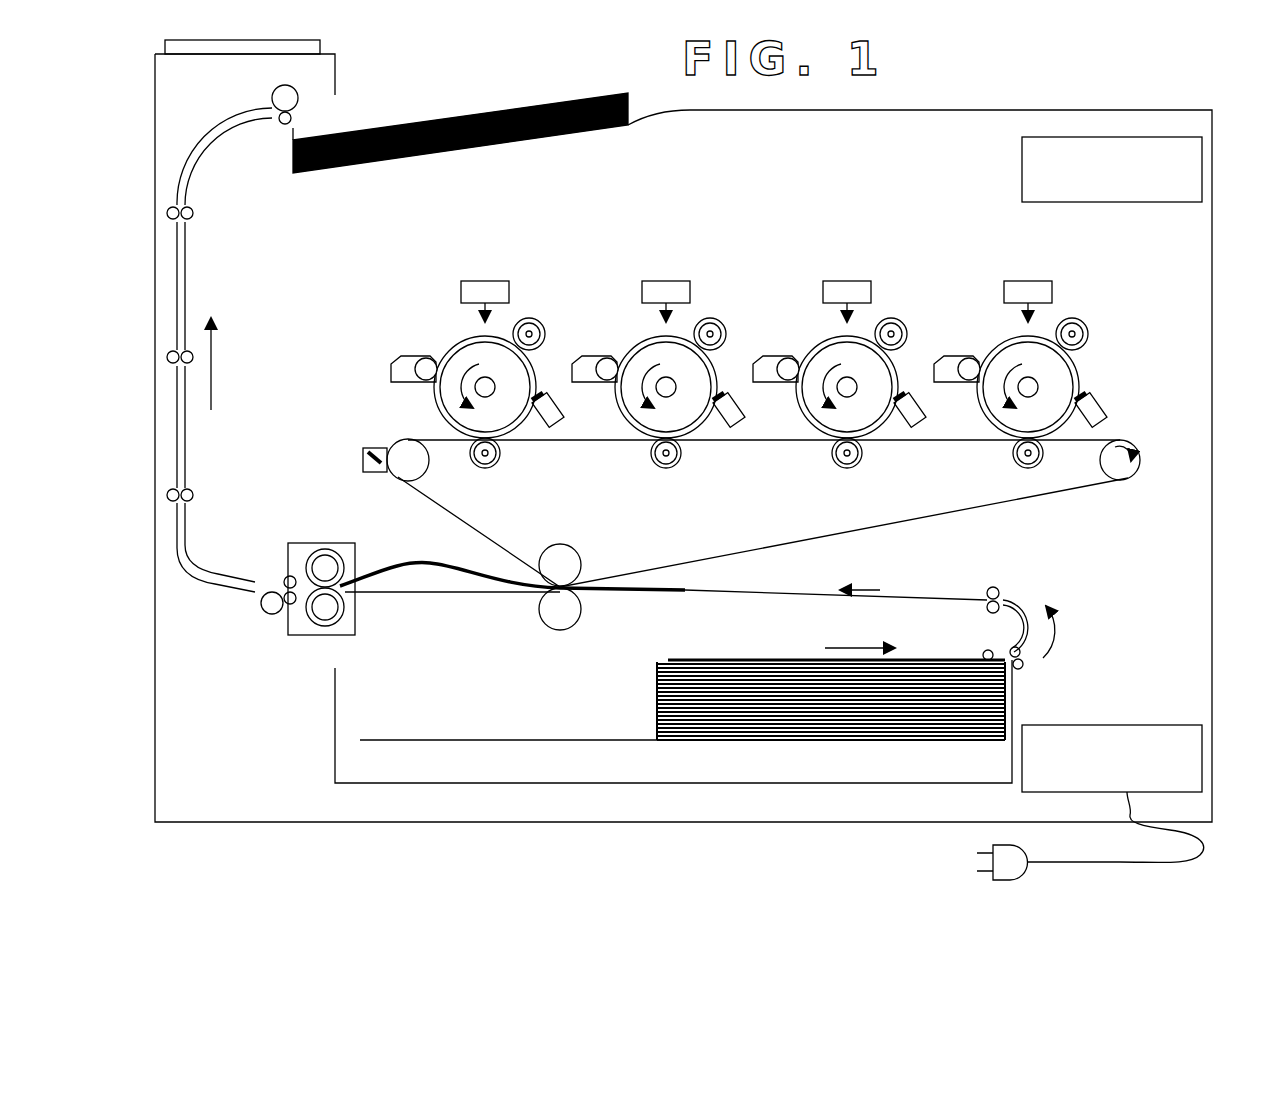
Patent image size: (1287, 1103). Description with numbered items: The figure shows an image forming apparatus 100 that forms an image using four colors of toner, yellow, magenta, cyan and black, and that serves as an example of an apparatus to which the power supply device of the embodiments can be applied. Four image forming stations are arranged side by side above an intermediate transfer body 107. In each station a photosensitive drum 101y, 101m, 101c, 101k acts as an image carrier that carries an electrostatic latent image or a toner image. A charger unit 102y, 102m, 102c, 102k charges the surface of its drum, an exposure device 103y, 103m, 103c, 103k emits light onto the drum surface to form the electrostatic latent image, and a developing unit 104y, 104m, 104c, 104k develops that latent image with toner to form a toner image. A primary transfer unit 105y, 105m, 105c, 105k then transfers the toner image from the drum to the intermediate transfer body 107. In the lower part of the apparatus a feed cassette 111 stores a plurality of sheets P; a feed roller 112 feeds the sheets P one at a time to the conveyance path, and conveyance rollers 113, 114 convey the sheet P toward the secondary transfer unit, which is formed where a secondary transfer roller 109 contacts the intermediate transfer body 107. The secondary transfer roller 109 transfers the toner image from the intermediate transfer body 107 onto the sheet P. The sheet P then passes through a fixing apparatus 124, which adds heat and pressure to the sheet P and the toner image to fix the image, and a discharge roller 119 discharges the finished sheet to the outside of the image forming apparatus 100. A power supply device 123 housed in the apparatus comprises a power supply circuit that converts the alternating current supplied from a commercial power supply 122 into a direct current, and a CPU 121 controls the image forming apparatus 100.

The image forming apparatus 100 is at (1045, 110).
The discharge roller 119 is at (272, 96).
The CPU 121 is at (1022, 170).
The photosensitive drum 101y is at (517, 437).
The photosensitive drum 101m is at (698, 437).
The photosensitive drum 101c is at (877, 437).
The photosensitive drum 101k is at (1053, 437).
The charger unit 102y is at (531, 318).
The charger unit 102m is at (712, 318).
The charger unit 102c is at (893, 318).
The charger unit 102k is at (1074, 318).
The exposure device 103y is at (476, 281).
The exposure device 103m is at (657, 281).
The exposure device 103c is at (838, 281).
The exposure device 103k is at (1019, 281).
The developing unit 104y is at (418, 356).
The developing unit 104m is at (599, 356).
The developing unit 104c is at (780, 356).
The developing unit 104k is at (959, 356).
The primary transfer unit 105y is at (487, 468).
The primary transfer unit 105m is at (668, 468).
The primary transfer unit 105c is at (848, 468).
The primary transfer unit 105k is at (1018, 461).
The intermediate transfer body 107 is at (1076, 497).
The secondary transfer roller 109 is at (545, 613).
The feed cassette 111 is at (335, 725).
The feed roller 112 is at (983, 652).
The conveyance roller 113 is at (1023, 665).
The conveyance roller 114 is at (993, 586).
The commercial power supply 122 is at (1196, 858).
The power supply device 123 is at (1158, 725).
The fixing apparatus 124 is at (300, 543).
The sheet P is at (396, 566).